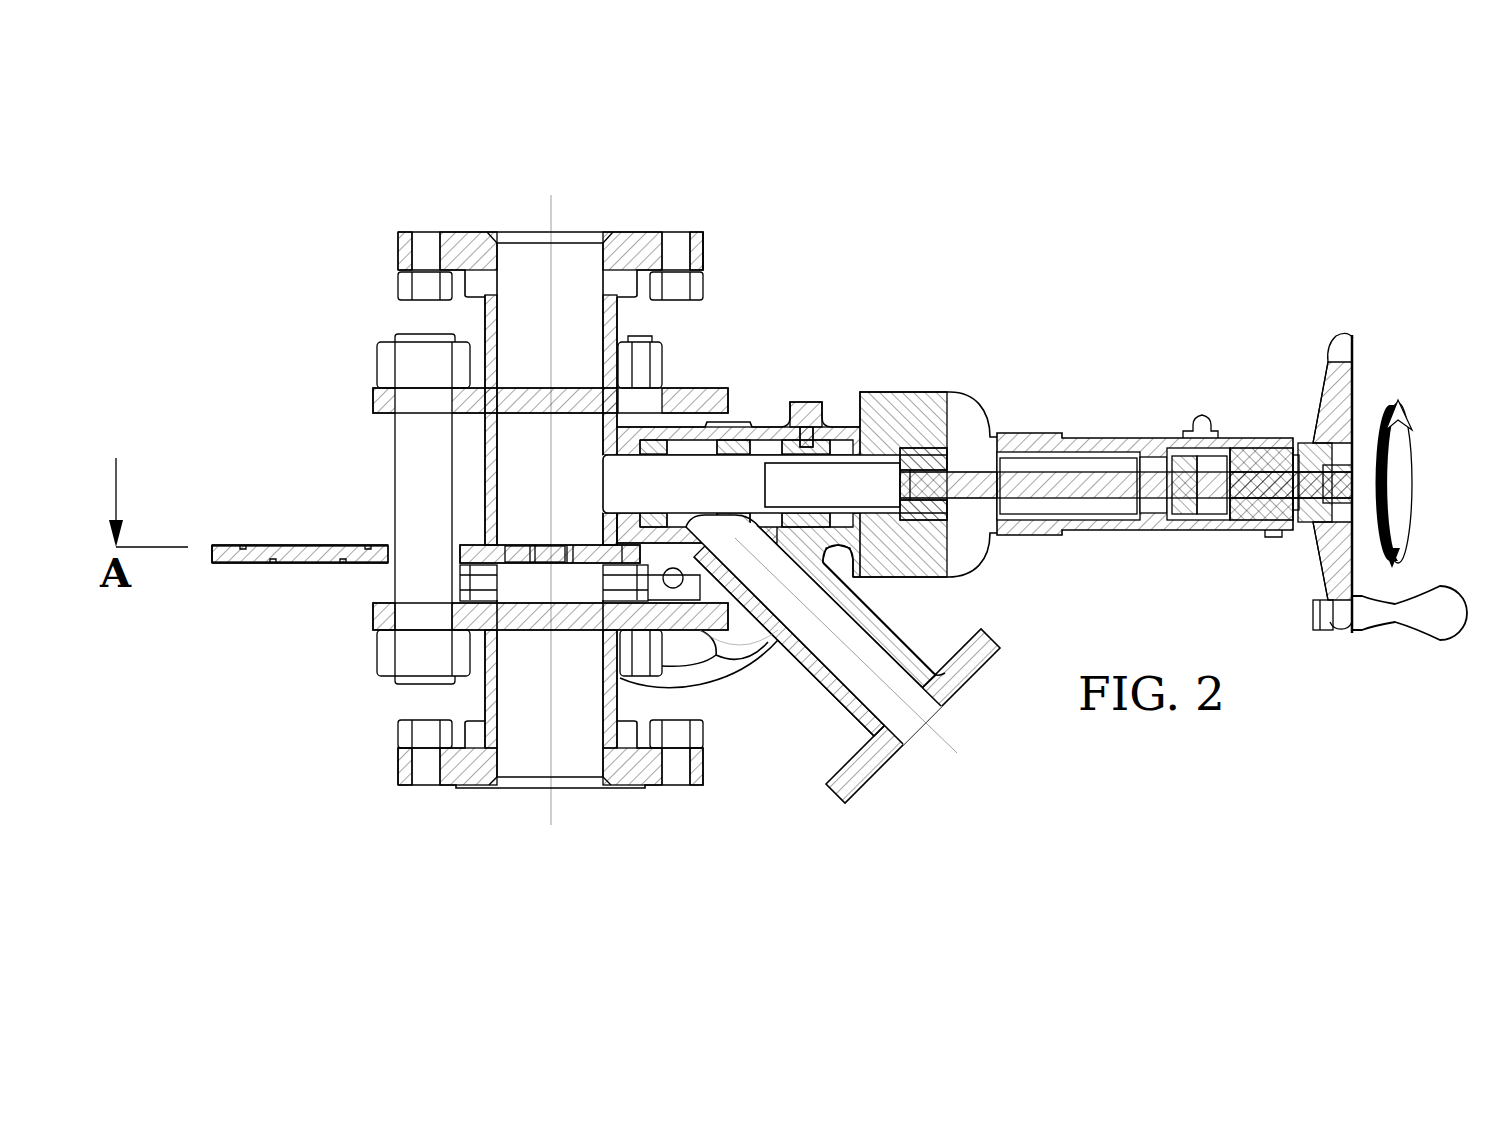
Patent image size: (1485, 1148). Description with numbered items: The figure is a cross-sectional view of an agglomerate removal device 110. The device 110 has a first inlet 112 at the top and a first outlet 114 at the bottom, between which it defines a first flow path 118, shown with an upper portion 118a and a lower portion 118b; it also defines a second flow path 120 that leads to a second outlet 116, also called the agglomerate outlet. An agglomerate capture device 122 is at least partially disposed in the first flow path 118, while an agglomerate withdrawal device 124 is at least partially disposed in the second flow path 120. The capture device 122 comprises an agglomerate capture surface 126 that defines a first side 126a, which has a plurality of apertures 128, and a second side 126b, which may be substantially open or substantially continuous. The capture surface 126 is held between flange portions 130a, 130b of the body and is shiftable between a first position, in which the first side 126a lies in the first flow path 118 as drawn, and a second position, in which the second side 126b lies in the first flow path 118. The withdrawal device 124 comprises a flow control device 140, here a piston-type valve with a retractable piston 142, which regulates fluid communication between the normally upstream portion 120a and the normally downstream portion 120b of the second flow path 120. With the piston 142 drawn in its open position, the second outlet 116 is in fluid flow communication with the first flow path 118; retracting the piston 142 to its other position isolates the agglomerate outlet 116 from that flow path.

The agglomerate removal device 110 is at (839, 498).
The first inlet 112 is at (587, 230).
The first outlet 114 is at (583, 780).
The second outlet 116 is at (941, 708).
The first flow path 118 is at (470, 509).
The upper flow passage portion 118a is at (550, 394).
The lower flow passage portion 118b is at (550, 670).
The second flow path 120 is at (821, 659).
The normally upstream portion of second flow path 120a is at (550, 314).
The normally downstream portion of second flow path 120b is at (822, 620).
The agglomerate capture device 122 is at (365, 480).
The agglomerate withdrawal device 124 is at (805, 340).
The agglomerate capture surface 126 is at (281, 564).
The first side 126a is at (508, 545).
The second side 126b is at (290, 552).
The apertures 128 is at (587, 552).
The upper body flange 130a is at (345, 403).
The lower body flange 130b is at (345, 619).
The flow control device 140 is at (988, 430).
The retractable piston 142 is at (868, 478).